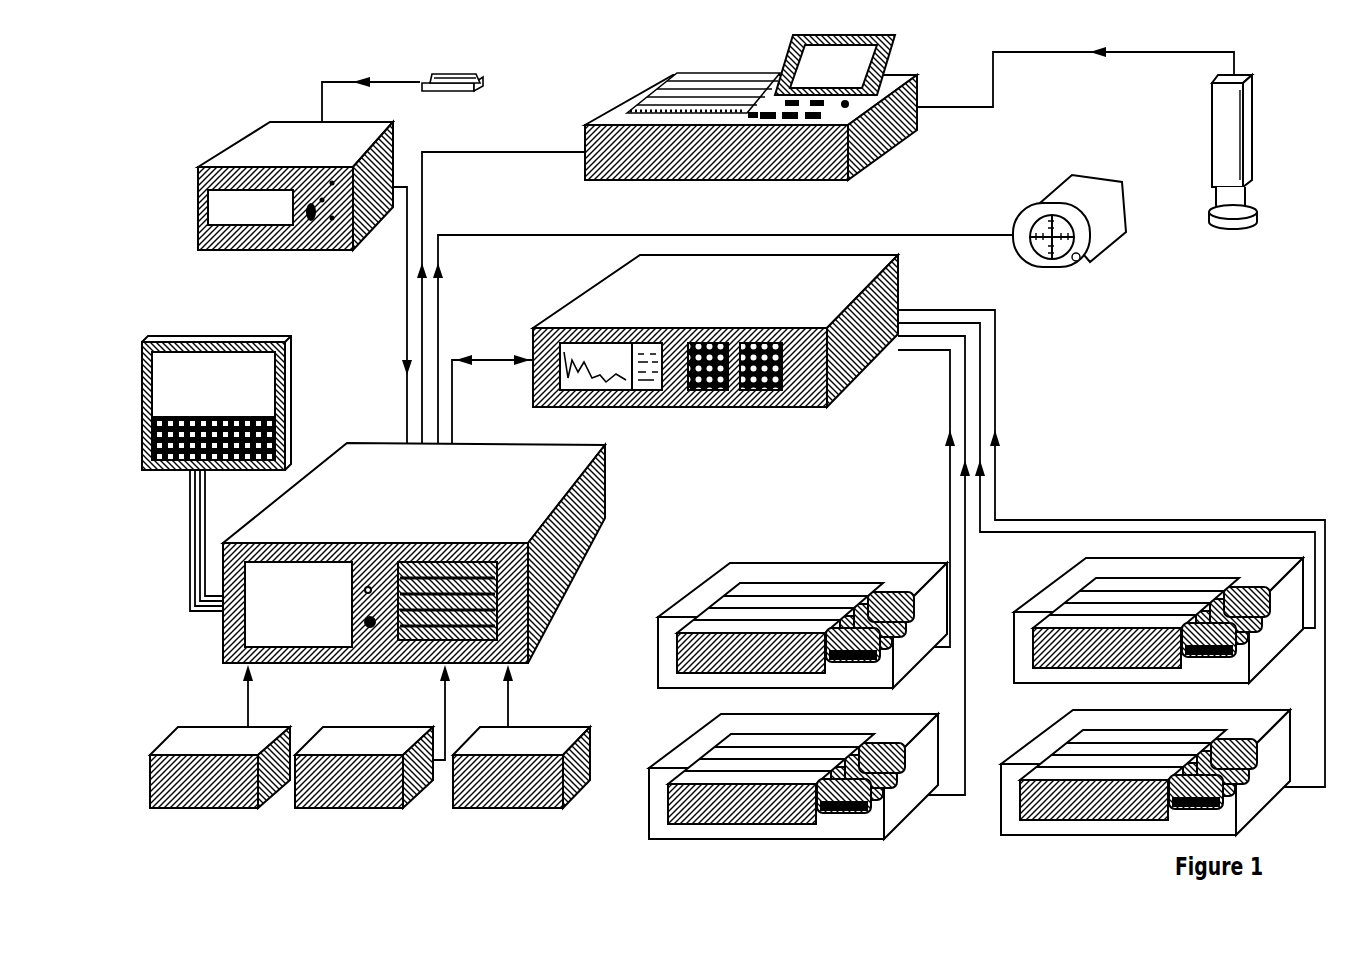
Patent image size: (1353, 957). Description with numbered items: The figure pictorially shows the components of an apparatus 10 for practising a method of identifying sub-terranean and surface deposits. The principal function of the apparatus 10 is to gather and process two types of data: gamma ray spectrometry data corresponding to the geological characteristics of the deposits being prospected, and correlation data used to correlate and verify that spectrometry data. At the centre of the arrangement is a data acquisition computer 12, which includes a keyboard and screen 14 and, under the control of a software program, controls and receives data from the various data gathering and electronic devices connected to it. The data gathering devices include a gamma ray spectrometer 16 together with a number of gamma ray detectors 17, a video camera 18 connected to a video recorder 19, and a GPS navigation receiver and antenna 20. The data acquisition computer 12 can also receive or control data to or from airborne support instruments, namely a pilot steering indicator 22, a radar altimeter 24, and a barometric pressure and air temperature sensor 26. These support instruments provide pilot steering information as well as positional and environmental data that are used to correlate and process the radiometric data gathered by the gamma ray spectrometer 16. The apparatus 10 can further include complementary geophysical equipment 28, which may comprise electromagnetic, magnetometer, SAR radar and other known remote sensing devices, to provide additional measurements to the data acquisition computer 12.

The apparatus 10 is at (1085, 423).
The data acquisition computer 12 is at (563, 598).
The keyboard and screen 14 is at (286, 405).
The gamma ray spectrometer 16 is at (820, 408).
The gamma ray detectors 17 is at (987, 574).
The video camera 18 is at (1255, 137).
The video recorder 19 is at (880, 148).
The GPS navigation receiver and antenna 20 is at (306, 122).
The pilot steering indicator 22 is at (1100, 240).
The radar altimeter 24 is at (154, 755).
The barometric pressure and air temperature sensor 26 is at (403, 805).
The complementary geophysical equipment 28 is at (590, 727).